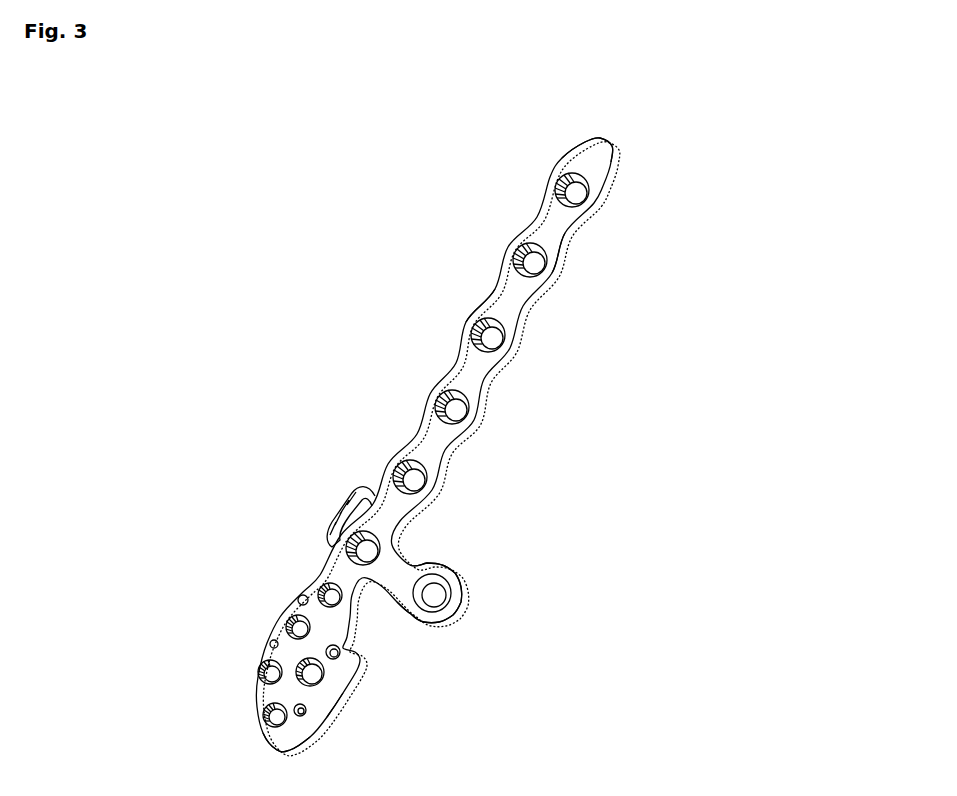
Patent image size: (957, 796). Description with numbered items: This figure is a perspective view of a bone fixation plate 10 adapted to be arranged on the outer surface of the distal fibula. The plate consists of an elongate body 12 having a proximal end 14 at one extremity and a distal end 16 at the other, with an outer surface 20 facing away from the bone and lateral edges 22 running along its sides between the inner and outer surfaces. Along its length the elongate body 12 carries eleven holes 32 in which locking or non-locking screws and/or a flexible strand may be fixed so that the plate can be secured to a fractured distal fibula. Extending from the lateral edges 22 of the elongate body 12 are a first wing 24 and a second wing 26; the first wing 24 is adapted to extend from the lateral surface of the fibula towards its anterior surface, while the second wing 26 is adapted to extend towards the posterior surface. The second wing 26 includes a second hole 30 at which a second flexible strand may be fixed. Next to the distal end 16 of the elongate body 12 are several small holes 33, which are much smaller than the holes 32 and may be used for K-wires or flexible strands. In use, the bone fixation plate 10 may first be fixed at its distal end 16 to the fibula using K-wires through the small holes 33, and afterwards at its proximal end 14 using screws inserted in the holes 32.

The bone fixation plate 10 is at (432, 144).
The elongate body 12 is at (512, 297).
The proximal end 14 is at (606, 150).
The distal end 16 is at (270, 743).
The outer surface 20 is at (568, 240).
The lateral edges 22 is at (460, 360).
The first wing 24 is at (364, 487).
The second wing 26 is at (458, 577).
The second hole 30 is at (430, 592).
The holes 32 is at (572, 190).
The small holes 33 is at (303, 600).